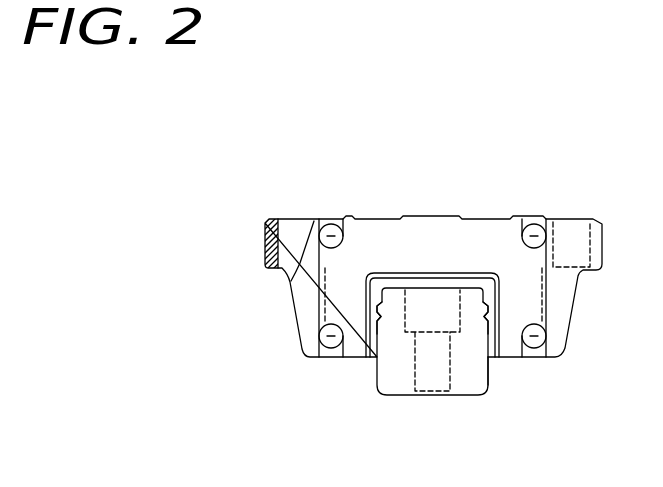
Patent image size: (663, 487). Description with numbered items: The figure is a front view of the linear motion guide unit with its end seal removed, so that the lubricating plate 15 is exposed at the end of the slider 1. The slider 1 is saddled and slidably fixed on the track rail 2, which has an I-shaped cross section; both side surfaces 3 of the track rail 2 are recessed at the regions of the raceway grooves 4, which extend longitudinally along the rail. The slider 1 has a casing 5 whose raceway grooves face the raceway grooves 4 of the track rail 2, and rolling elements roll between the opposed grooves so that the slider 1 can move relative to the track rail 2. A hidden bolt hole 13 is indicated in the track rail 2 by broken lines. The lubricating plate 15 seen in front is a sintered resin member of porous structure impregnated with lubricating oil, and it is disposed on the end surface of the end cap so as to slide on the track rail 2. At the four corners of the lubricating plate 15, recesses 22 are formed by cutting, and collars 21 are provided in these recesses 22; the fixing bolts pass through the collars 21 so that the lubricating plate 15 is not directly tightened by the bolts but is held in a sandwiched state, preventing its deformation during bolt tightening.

The slider 1 is at (446, 217).
The track rail 2 is at (399, 361).
The side surfaces 3 is at (491, 361).
The raceway grooves 4 is at (489, 318).
The casing 5 is at (318, 219).
The rail mounting bolt hole 13 is at (450, 358).
The lubricating plates 15 is at (386, 250).
The collars 21 is at (545, 220).
The recesses 22 is at (527, 224).